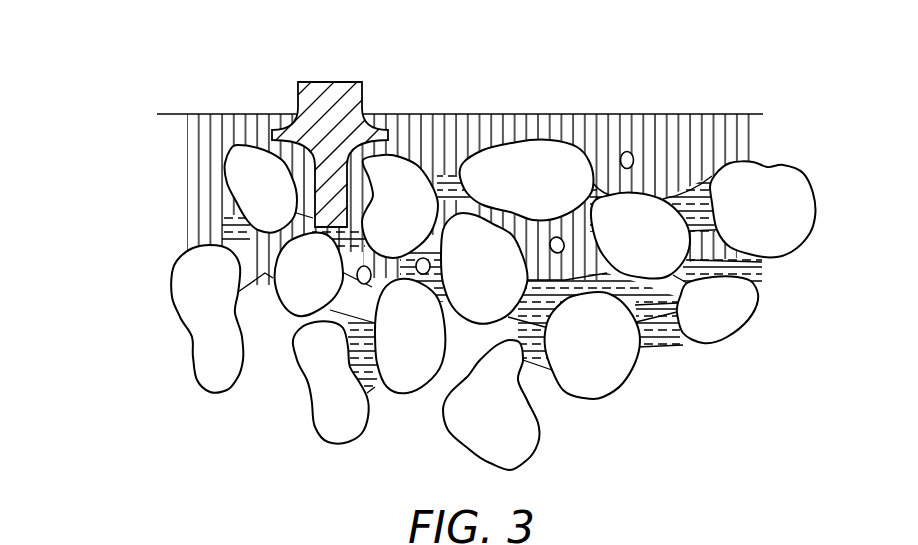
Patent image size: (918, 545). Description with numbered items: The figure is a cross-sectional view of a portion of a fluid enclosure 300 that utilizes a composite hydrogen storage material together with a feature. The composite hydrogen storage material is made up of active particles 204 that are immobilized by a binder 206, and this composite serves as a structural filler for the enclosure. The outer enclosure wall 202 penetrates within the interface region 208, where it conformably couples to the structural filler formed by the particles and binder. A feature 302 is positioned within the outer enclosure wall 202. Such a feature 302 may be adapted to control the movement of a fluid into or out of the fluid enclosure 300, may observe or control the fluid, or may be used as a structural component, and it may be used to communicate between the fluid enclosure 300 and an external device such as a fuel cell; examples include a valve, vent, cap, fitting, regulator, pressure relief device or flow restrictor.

The fluid enclosure 300 is at (748, 69).
The outer enclosure wall 202 is at (750, 133).
The active particles 204 is at (797, 247).
The binder 206 is at (660, 337).
The interface region 208 is at (160, 100).
The feature 302 is at (330, 82).